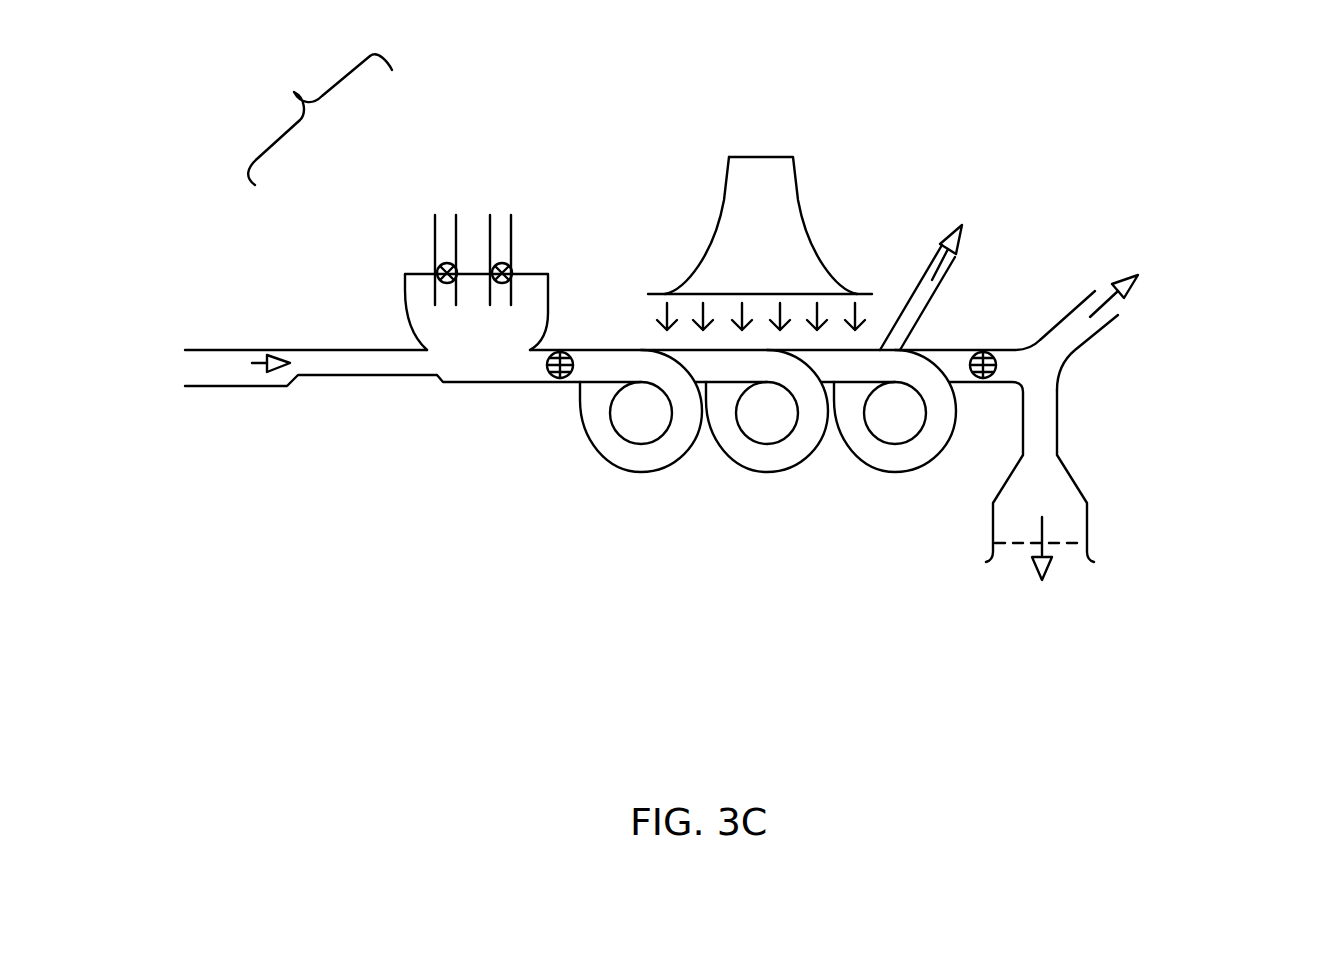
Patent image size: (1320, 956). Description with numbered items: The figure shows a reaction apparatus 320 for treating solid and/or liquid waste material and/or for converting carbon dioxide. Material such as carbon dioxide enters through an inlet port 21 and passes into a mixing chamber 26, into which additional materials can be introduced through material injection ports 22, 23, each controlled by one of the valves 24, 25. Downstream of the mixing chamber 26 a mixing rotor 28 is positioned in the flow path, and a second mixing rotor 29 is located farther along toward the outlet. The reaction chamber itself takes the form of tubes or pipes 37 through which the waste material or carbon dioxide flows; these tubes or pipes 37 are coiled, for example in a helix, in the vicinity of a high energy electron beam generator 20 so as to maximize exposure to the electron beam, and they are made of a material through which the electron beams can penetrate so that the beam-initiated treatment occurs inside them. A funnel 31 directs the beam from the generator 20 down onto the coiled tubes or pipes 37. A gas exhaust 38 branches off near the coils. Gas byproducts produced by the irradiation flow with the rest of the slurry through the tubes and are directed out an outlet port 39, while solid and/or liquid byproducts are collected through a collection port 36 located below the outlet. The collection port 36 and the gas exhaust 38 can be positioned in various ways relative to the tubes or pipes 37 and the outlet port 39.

The reaction apparatus 320 is at (305, 116).
The inlet port 21 is at (413, 348).
The material injection port 22 is at (447, 243).
The material injection port 23 is at (501, 243).
The valve 24 is at (427, 262).
The valve 25 is at (521, 262).
The mixing chamber 26 is at (476, 320).
The mixing rotor 28 is at (566, 348).
The high energy electron beam generator 20 is at (795, 257).
The funnel 31 is at (761, 294).
The tubes or pipes 37 is at (598, 458).
The gas exhaust 38 is at (938, 242).
The mixing rotor 29 is at (987, 346).
The outlet port 39 is at (1130, 307).
The collection port 36 is at (1020, 562).